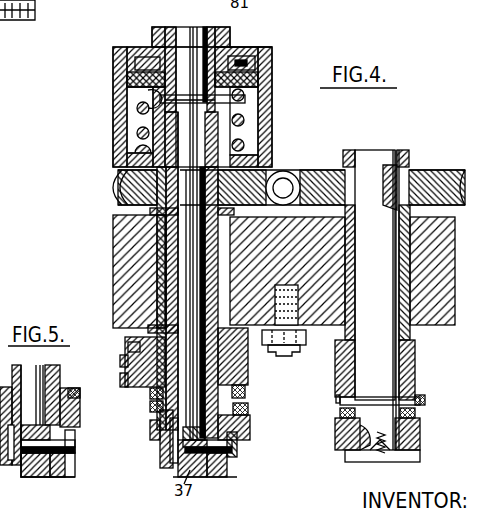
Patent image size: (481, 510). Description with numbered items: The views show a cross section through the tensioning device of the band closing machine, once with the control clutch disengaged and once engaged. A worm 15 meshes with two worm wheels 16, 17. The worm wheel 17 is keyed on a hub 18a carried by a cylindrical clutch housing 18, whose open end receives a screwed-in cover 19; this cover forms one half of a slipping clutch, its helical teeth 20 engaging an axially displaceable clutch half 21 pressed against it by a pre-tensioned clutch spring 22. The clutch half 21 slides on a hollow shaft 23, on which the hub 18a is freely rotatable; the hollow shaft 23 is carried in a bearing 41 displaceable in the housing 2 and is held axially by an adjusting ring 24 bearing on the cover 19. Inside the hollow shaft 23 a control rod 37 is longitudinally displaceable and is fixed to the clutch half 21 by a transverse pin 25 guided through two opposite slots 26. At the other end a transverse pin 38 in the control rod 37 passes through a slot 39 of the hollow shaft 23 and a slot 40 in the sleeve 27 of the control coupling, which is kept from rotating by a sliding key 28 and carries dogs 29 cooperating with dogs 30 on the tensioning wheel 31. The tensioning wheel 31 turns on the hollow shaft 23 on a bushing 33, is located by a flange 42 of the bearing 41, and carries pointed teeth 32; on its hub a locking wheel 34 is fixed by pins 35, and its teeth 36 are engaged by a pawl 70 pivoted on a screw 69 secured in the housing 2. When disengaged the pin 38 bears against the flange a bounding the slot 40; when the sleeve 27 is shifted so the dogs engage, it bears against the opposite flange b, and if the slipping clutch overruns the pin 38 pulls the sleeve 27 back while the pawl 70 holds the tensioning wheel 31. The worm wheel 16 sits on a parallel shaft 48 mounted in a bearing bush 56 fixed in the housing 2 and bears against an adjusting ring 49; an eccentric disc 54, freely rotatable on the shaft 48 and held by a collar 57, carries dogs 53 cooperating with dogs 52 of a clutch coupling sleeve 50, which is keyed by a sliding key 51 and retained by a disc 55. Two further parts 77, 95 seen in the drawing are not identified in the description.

In FIG. 4, the housing 2 is at (120, 243).
In FIG. 4, the worm 15 is at (290, 172).
In FIG. 4, the worm wheel 16 is at (445, 180).
In FIG. 4, the worm wheel 17 is at (122, 188).
In FIG. 4, the clutch housing 18 is at (125, 150).
In FIG. 4, the hub 18a is at (168, 176).
In FIG. 4, the cover 19 is at (258, 50).
In FIG. 4, the helical teeth 20 is at (250, 64).
In FIG. 4, the clutch half 21 is at (255, 78).
In FIG. 4, the clutch spring 22 is at (245, 97).
In FIG. 4, the hollow shaft 23 is at (207, 30).
In FIG. 5, the hollow shaft 23 is at (16, 470).
In FIG. 4, the adjusting ring 24 is at (158, 37).
In FIG. 4, the transverse pin 25 is at (162, 99).
In FIG. 4, the slots 26 is at (135, 118).
In FIG. 4, the sleeve 27 is at (160, 428).
In FIG. 5, the sleeve 27 is at (72, 420).
In FIG. 4, the sliding key 28 is at (172, 450).
In FIG. 4, the dogs 29 is at (248, 409).
In FIG. 4, the dogs 30 is at (245, 392).
In FIG. 4, the tensioning wheel 31 is at (122, 380).
In FIG. 4, the pointed teeth 32 is at (122, 362).
In FIG. 4, the bushing 33 is at (183, 370).
In FIG. 4, the locking wheel 34 is at (128, 344).
In FIG. 4, the pins 35 is at (150, 395).
In FIG. 4, the teeth 36 is at (130, 350).
In FIG. 4, the control rod 37 is at (176, 30).
In FIG. 5, the control rod 37 is at (40, 470).
In FIG. 4, the transverse pin 38 is at (216, 470).
In FIG. 5, the transverse pin 38 is at (64, 462).
In FIG. 4, the slot 39 is at (228, 468).
In FIG. 5, the slot 39 is at (68, 470).
In FIG. 4, the slot 40 is at (236, 457).
In FIG. 5, the slot 40 is at (75, 443).
In FIG. 4, the bearing 41 is at (160, 265).
In FIG. 4, the flange 42 is at (150, 212).
In FIG. 4, the shaft 48 is at (390, 152).
In FIG. 4, the adjusting ring 49 is at (402, 165).
In FIG. 4, the clutch coupling sleeve 50 is at (422, 430).
In FIG. 4, the sliding key 51 is at (358, 436).
In FIG. 4, the dogs 52 is at (417, 413).
In FIG. 4, the dogs 53 is at (426, 401).
In FIG. 4, the eccentric disc 54 is at (412, 368).
In FIG. 4, the disc 55 is at (415, 460).
In FIG. 4, the bearing bush 56 is at (410, 335).
In FIG. 4, the collar 57 is at (340, 401).
In FIG. 4, the screw 69 is at (296, 352).
In FIG. 4, the pawl 70 is at (306, 340).
In FIG. 4, the ring 77 is at (245, 423).
In FIG. 4, the spring 95 is at (422, 440).
In FIG. 4, the flange a is at (232, 443).
In FIG. 5, the flange a is at (72, 438).
In FIG. 4, the flange b is at (232, 450).
In FIG. 5, the flange b is at (72, 452).